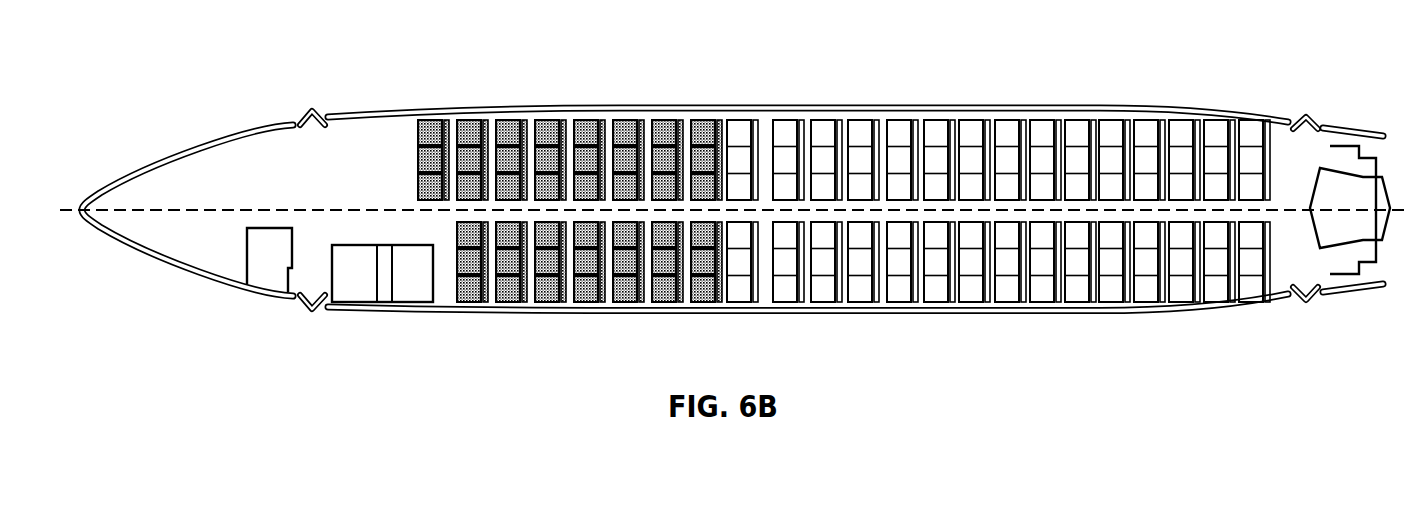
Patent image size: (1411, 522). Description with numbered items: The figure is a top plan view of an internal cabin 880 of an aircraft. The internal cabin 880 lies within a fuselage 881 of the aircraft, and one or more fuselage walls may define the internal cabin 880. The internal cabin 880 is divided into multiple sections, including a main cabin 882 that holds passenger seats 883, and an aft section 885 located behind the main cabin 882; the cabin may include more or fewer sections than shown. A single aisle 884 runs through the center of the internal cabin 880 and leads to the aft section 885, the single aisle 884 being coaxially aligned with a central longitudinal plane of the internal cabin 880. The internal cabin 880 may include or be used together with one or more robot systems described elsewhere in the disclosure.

The internal cabin 880 is at (332, 58).
The fuselage 881 is at (534, 112).
The main cabin 882 is at (474, 128).
The passenger seats 883 is at (742, 140).
The single aisle 884 is at (863, 205).
The aft section 885 is at (1290, 140).